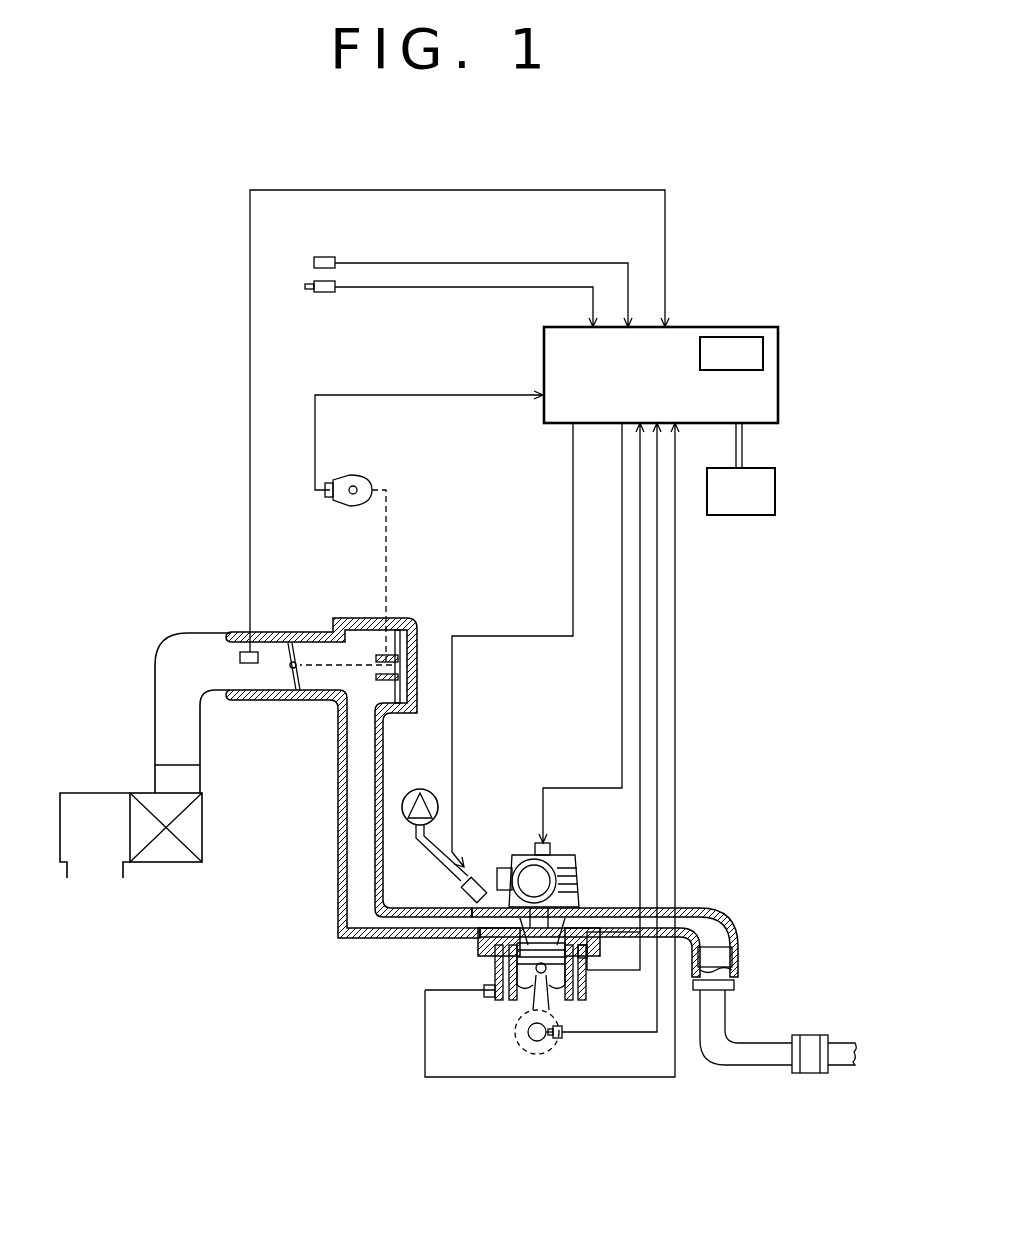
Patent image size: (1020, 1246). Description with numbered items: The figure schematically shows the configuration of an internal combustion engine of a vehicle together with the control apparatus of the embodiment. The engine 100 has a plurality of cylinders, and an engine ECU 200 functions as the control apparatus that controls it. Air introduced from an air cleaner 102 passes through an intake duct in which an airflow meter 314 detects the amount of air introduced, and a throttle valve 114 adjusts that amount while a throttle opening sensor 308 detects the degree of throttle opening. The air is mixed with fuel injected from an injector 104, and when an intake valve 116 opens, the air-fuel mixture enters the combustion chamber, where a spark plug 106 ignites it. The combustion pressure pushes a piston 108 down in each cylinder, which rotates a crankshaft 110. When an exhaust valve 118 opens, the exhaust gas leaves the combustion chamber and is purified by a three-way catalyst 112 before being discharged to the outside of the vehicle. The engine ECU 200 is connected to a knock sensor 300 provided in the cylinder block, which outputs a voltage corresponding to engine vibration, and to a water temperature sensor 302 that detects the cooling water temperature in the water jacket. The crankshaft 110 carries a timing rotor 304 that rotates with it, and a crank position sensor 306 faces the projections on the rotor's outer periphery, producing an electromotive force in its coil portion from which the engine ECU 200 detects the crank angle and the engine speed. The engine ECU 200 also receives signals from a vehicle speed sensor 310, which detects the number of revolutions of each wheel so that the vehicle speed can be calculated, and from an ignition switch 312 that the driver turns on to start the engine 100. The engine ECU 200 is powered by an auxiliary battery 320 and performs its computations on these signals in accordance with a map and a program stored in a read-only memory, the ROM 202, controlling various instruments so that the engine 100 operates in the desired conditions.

The engine 100 is at (462, 960).
The air cleaner 102 is at (165, 862).
The injector 104 is at (467, 872).
The spark plug 106 is at (550, 845).
The piston 108 is at (522, 997).
The crankshaft 110 is at (538, 1055).
The three-way catalyst 112 is at (728, 948).
The throttle valve 114 is at (291, 694).
The intake valve 116 is at (433, 908).
The exhaust valve 118 is at (605, 912).
The engine ECU 200 is at (731, 327).
The read-only memory (ROM) 202 is at (763, 350).
The knock sensor 300 is at (487, 997).
The water temperature sensor 302 is at (584, 976).
The timing rotor 304 is at (546, 1040).
The crank position sensor 306 is at (572, 1033).
The throttle opening sensor 308 is at (390, 463).
The vehicle speed sensor 310 is at (352, 236).
The ignition switch 312 is at (319, 292).
The airflow meter 314 is at (261, 632).
The auxiliary battery 320 is at (775, 490).